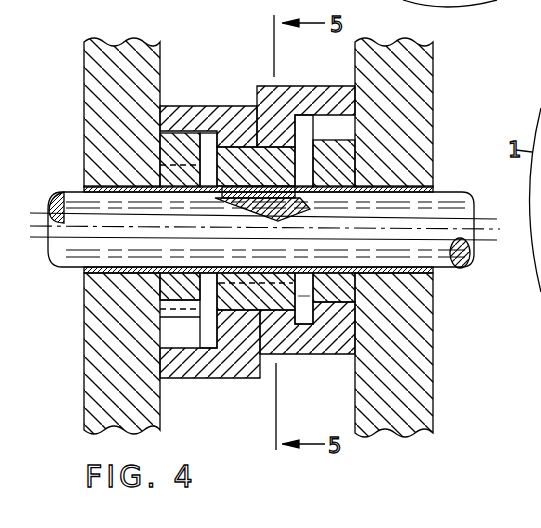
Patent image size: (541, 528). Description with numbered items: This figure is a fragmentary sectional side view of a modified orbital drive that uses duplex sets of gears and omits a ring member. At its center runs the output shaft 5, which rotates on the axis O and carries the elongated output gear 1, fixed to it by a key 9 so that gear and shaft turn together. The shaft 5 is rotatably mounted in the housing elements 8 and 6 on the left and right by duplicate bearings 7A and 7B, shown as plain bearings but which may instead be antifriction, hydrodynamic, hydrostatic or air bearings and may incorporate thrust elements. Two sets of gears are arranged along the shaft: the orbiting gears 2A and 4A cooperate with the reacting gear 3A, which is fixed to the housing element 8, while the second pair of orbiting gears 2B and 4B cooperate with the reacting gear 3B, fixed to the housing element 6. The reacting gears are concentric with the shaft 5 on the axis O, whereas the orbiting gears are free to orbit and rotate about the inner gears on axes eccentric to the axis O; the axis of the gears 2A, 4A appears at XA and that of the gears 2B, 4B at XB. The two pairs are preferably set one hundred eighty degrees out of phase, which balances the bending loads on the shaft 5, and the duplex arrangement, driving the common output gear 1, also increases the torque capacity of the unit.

The output gear 1 is at (298, 295).
The orbiting gear 2A is at (205, 135).
The orbiting gear 2B is at (300, 127).
The reacting gear 3A is at (175, 325).
The reacting gear 3B is at (328, 140).
The orbiting gear 4A is at (178, 112).
The orbiting gear 4B is at (321, 85).
The output shaft 5 is at (450, 196).
The housing element 6 is at (434, 76).
The bearing 7A is at (117, 185).
The bearing 7B is at (437, 275).
The housing element 8 is at (84, 79).
The key 9 is at (271, 205).
The axis O is at (492, 228).
The axis of orbiting gears 2a, 4a XA is at (478, 241).
The axis of orbiting gears 2b, 4b XB is at (478, 219).